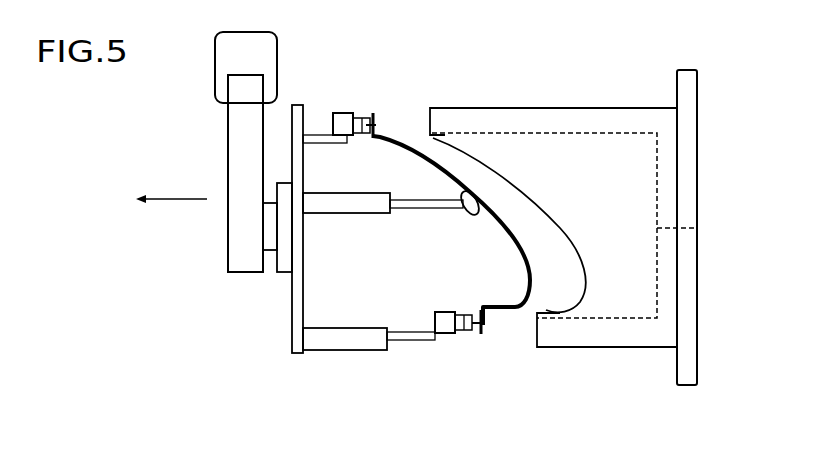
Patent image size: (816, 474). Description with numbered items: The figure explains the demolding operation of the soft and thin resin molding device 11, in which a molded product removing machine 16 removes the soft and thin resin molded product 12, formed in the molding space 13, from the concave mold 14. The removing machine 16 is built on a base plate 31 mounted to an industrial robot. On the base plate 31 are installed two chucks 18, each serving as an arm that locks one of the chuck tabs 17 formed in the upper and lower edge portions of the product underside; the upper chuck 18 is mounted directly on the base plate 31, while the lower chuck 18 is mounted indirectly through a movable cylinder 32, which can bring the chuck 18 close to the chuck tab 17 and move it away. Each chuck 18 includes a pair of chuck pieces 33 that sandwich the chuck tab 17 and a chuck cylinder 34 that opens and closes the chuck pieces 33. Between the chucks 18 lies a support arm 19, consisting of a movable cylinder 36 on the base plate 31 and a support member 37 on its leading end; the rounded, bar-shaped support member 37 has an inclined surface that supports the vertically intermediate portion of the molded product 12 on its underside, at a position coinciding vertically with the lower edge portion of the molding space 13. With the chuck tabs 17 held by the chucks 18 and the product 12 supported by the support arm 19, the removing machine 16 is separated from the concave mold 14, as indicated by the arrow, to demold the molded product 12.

The soft and thin resin molding device 11 is at (498, 79).
The soft and thin resin molded product 12 is at (493, 220).
The molding space 13 is at (558, 228).
The concave mold 14 is at (458, 105).
The molded product removing machine 16 is at (283, 33).
The chuck tab 17 is at (370, 116).
The chuck 18 is at (341, 106).
The support arm 19 is at (398, 198).
The base plate 31 is at (305, 278).
The movable cylinder 32 is at (348, 333).
The chuck piece 33 is at (360, 134).
The chuck cylinder 34 is at (346, 138).
The movable cylinder 36 is at (362, 207).
The support member 37 is at (472, 210).